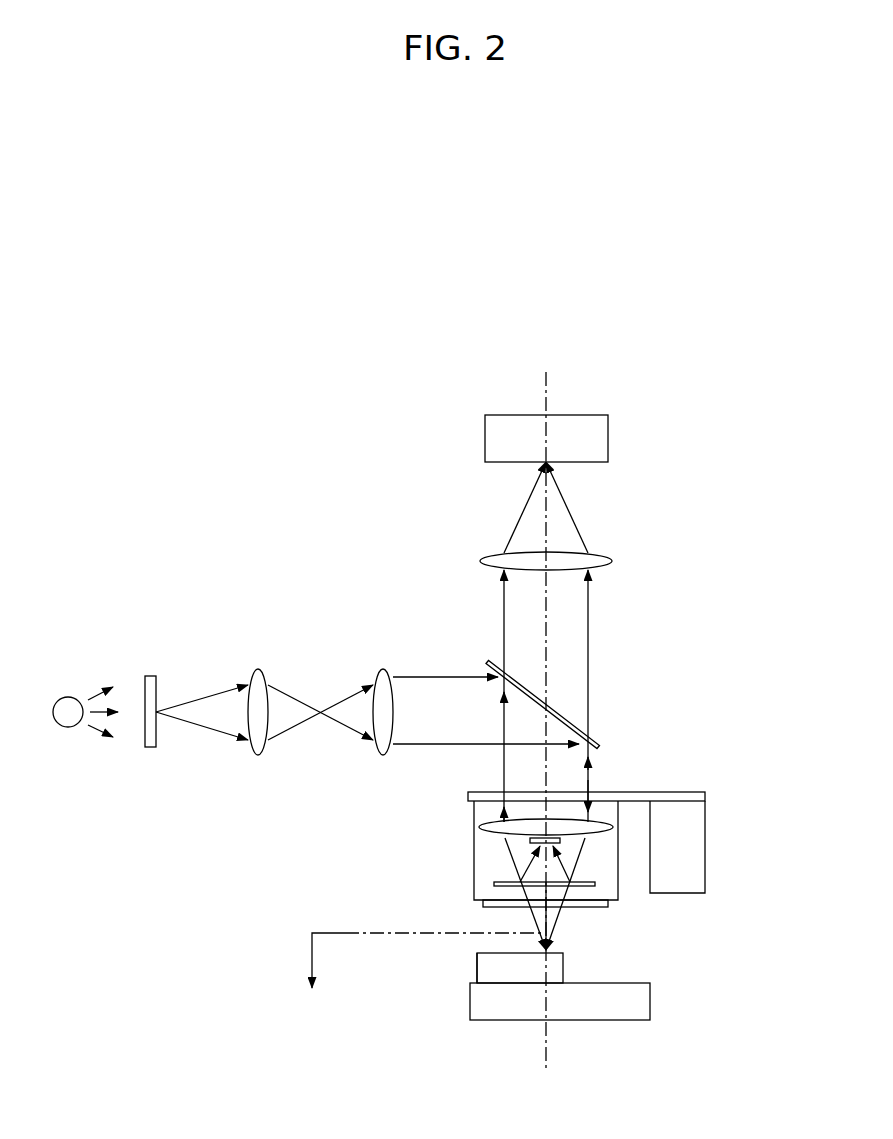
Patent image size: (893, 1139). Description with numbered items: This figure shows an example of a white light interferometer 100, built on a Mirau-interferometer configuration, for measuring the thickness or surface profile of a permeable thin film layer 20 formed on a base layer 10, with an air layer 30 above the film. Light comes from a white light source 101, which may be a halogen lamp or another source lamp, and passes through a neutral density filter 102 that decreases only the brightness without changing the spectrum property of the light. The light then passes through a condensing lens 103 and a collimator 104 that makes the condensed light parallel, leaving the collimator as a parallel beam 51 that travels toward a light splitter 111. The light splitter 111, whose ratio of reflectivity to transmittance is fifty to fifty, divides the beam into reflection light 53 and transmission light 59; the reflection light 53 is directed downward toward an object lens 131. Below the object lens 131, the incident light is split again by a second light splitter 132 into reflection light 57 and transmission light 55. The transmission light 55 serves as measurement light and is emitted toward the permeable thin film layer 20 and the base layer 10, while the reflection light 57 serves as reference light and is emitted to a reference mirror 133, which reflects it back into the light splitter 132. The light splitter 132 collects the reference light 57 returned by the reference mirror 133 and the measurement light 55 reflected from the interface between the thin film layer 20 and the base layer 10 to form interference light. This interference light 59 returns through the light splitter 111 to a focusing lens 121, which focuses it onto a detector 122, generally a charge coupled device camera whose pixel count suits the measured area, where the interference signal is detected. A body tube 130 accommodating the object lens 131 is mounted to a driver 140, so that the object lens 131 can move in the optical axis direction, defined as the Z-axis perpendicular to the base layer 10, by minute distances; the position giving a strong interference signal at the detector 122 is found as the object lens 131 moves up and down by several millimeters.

The interferometer 100 is at (270, 522).
The white light source 101 is at (68, 697).
The neutral density (ND) filter 102 is at (150, 676).
The condensing lens 103 is at (257, 668).
The collimator 104 is at (380, 670).
The illumination light 51 is at (433, 745).
The light splitter 111 is at (578, 731).
The transmission light 59 is at (505, 620).
The reflection light 53 is at (503, 762).
The focusing lens 121 is at (618, 552).
The detector 122 is at (485, 438).
The driver 140 is at (672, 792).
The reflection light (reference light) 57 is at (563, 870).
The object lens 131 is at (480, 828).
The reference mirror 133 is at (520, 848).
The body tube 130 is at (495, 885).
The light splitter 132 is at (483, 905).
The transmission light (measurement light) 55 is at (560, 922).
The air layer 30 is at (583, 952).
The permeable thin film layer 20 is at (478, 968).
The base layer 10 is at (518, 1015).